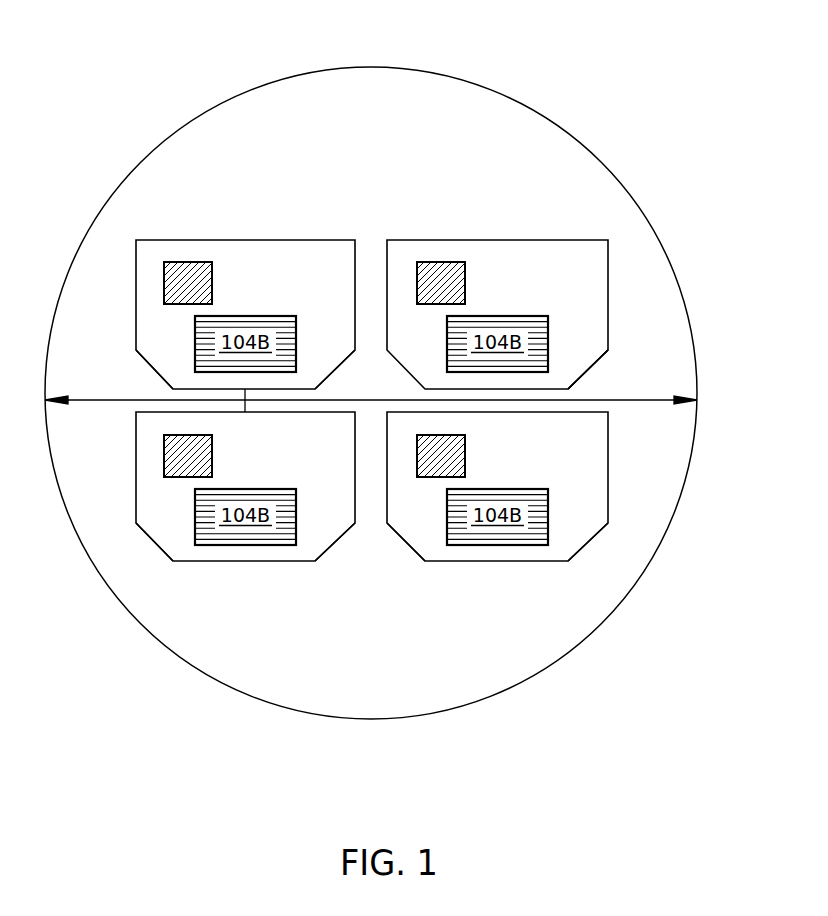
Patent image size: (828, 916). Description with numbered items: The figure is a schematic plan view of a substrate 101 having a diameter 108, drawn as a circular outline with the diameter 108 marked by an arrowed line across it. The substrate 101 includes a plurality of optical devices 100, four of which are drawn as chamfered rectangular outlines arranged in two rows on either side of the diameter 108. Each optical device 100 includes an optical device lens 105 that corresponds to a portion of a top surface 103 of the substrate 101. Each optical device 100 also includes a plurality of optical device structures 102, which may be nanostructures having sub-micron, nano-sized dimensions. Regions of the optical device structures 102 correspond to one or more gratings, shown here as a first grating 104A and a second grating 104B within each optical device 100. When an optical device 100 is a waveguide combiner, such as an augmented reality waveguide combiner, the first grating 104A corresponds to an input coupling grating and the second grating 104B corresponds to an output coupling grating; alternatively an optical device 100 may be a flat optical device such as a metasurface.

The optical device 100 is at (298, 285).
The substrate 101 is at (543, 63).
The optical device structures 102 is at (197, 354).
The top surface 103 is at (293, 103).
The first grating 104A is at (192, 273).
The second grating 104B is at (371, 430).
The optical device lens 105 is at (330, 275).
The diameter 108 is at (658, 403).